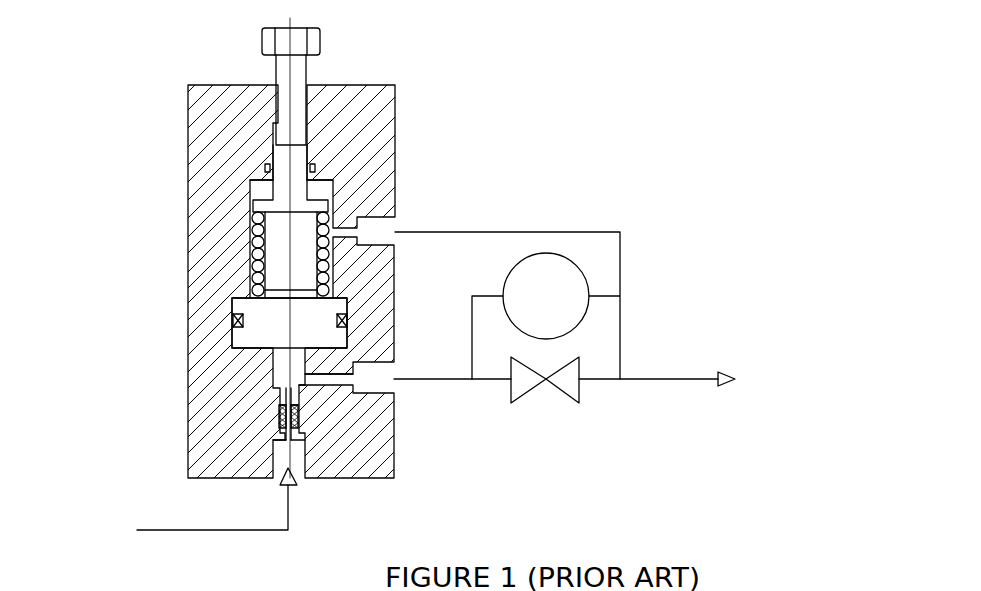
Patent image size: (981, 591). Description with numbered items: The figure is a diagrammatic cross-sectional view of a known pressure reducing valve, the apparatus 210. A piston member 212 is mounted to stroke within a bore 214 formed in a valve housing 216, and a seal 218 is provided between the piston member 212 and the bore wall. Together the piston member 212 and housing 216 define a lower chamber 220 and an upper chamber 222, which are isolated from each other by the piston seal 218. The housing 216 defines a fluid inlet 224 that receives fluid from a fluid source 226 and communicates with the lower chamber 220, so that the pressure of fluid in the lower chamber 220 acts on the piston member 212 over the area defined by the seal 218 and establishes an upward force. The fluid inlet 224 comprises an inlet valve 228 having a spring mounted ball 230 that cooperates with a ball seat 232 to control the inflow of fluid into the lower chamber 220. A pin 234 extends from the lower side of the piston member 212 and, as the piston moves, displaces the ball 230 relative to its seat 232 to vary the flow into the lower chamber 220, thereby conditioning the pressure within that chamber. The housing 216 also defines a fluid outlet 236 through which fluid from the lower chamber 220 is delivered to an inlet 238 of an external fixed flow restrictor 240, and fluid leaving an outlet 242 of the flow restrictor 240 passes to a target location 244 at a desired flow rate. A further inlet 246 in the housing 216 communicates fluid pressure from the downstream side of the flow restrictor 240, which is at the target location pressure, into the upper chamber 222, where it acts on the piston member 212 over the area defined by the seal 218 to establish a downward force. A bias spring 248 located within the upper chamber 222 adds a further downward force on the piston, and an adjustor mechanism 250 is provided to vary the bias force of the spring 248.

The apparatus 210 is at (140, 57).
The piston member 212 is at (257, 307).
The bore 214 is at (250, 260).
The valve housing 216 is at (195, 366).
The seal 218 is at (233, 320).
The lower chamber 220 is at (273, 353).
The upper chamber 222 is at (293, 230).
The fluid inlet 224 is at (292, 462).
The fluid source 226 is at (172, 506).
The inlet valve 228 is at (270, 398).
The spring mounted ball 230 is at (276, 420).
The ball seat 232 is at (285, 398).
The pin 234 is at (290, 388).
The fluid outlet 236 is at (380, 385).
The inlet of flow restrictor 238 is at (508, 377).
The fixed flow restrictor 240 is at (546, 382).
The outlet of flow restrictor 242 is at (583, 382).
The target location 244 is at (705, 377).
The further inlet 246 is at (377, 232).
The bias spring 248 is at (260, 223).
The adjustor mechanism 250 is at (313, 37).